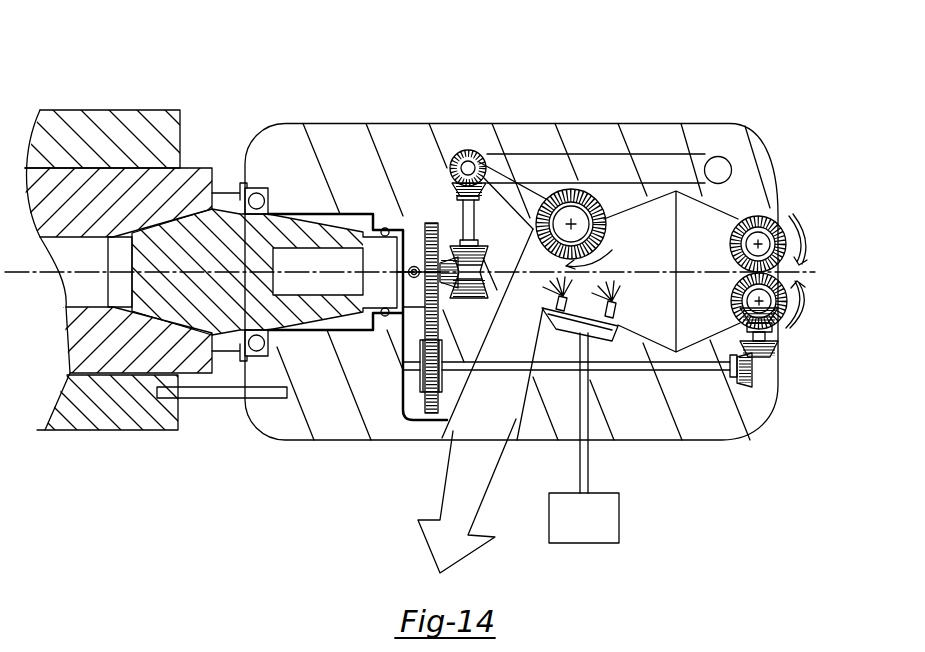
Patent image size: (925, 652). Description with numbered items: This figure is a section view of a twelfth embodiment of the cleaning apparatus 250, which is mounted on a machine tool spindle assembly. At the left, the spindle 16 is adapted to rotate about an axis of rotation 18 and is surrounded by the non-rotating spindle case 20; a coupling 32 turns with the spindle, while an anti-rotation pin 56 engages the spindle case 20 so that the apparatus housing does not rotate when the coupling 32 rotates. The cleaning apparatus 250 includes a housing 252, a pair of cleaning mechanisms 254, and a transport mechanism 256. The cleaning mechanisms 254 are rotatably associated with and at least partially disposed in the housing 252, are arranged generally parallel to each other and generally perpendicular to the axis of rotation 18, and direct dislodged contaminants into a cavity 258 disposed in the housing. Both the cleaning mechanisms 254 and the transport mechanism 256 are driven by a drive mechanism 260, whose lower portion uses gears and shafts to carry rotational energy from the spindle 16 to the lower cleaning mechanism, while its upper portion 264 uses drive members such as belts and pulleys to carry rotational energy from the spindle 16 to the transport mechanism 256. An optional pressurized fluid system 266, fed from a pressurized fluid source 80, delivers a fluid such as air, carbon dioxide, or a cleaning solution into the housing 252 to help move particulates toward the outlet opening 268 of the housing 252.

The spindle 16 is at (80, 167).
The axis of rotation 18 is at (18, 273).
The spindle case 20 is at (118, 432).
The coupling 32 is at (240, 183).
The anti-rotation pin 56 is at (216, 400).
The pressurized fluid source 80 is at (619, 518).
The cleaning apparatus 250 is at (526, 322).
The housing 252 is at (322, 123).
The cleaning mechanisms 254 is at (733, 297).
The transport mechanisms 256 is at (560, 188).
The cavity 258 is at (660, 304).
The drive mechanism 260 is at (417, 149).
The upper portion 264 is at (695, 194).
The pressurized fluid system 266 is at (606, 551).
The outlet opening 268 is at (468, 435).